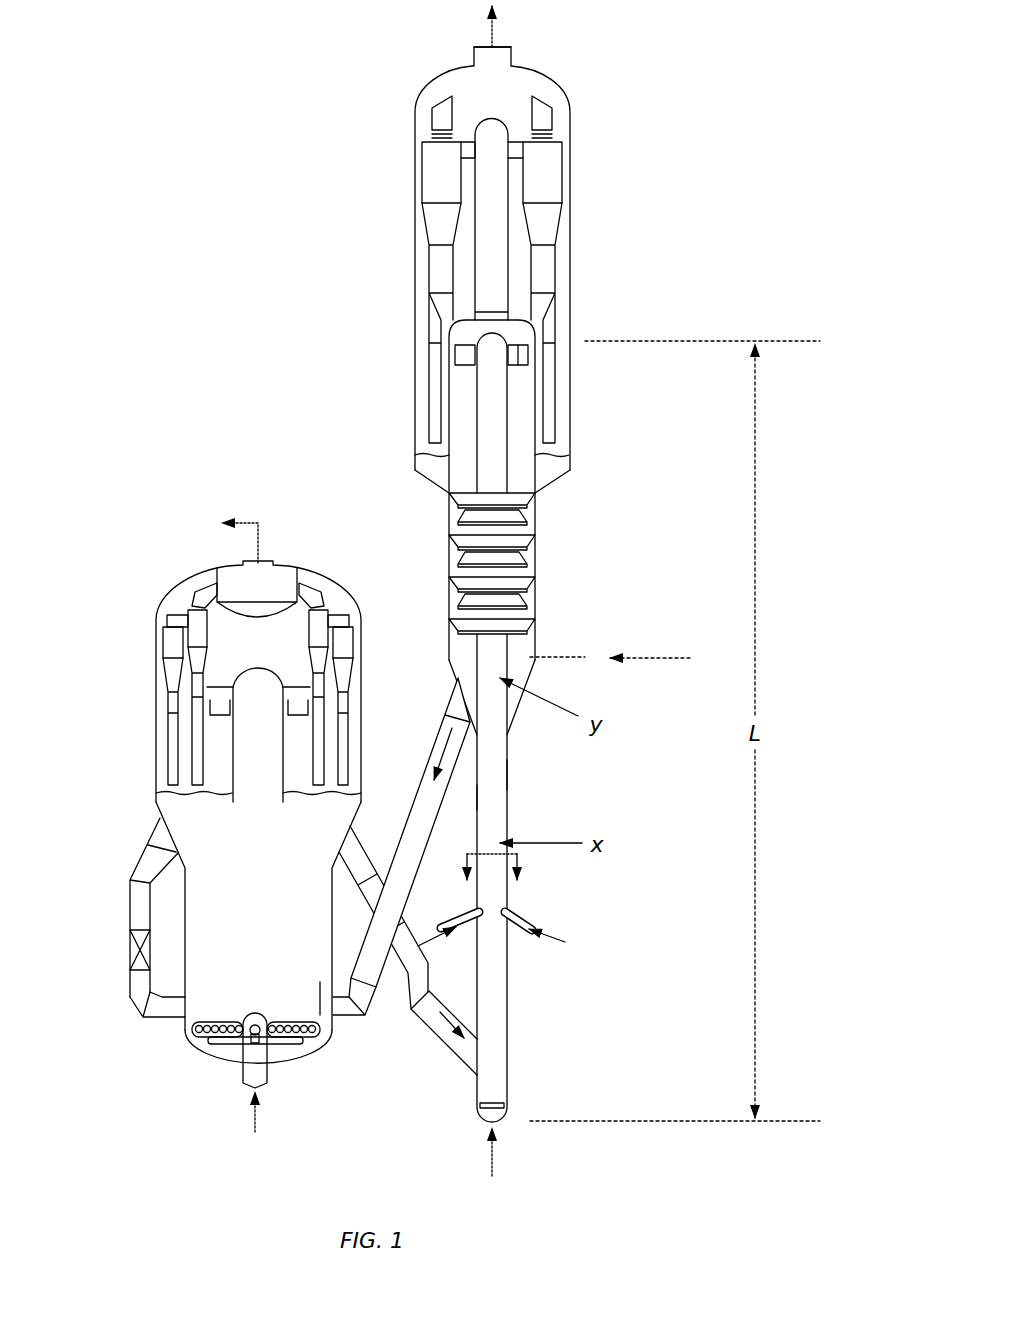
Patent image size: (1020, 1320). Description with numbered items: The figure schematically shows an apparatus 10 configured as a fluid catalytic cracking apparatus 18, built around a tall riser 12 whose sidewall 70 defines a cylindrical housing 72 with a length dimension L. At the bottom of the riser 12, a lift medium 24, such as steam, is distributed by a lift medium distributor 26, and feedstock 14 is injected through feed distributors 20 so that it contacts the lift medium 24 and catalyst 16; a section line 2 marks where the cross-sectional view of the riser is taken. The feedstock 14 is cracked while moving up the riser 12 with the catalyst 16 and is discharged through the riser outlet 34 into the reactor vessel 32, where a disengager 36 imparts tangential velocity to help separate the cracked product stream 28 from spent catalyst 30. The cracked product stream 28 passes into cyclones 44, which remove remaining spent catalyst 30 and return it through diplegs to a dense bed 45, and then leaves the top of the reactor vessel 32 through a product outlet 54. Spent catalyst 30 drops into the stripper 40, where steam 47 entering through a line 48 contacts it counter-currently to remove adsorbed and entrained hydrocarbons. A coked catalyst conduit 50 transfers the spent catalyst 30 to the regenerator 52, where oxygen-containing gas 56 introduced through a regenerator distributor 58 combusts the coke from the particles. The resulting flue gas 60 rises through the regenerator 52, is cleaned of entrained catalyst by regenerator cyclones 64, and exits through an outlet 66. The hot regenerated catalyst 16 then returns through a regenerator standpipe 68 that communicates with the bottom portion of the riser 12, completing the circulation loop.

The apparatus 10 is at (670, 75).
The riser 12 is at (510, 817).
The feedstock 14 is at (433, 935).
The catalyst 16 is at (450, 1032).
The fluid catalytic cracking apparatus 18 is at (362, 398).
The line 2- 2 is at (488, 880).
The feed distributors 20 is at (462, 938).
The lift medium 24 is at (494, 1160).
The lift medium distributor 26 is at (478, 1106).
The cracked product stream 28 is at (494, 24).
The spent catalyst 30 is at (451, 732).
The reactor vessel 32 is at (572, 228).
The riser outlet 34 is at (528, 360).
The disengager 36 is at (462, 347).
The stripper 40 is at (536, 522).
The cyclones 44 is at (437, 172).
The dense bed 45 is at (422, 460).
The steam 47 is at (650, 662).
The line 48 is at (560, 660).
The coked catalyst conduit 50 is at (432, 768).
The regenerator 52 is at (205, 900).
The product outlet 54 is at (481, 46).
The oxygen-containing gas 56 is at (255, 1124).
The regenerator distributor 58 is at (245, 1072).
The flue gas 60 is at (258, 540).
The regenerator cyclones 64 is at (170, 645).
The outlet 66 is at (270, 566).
The regenerator standpipe 68 is at (403, 972).
The sidewall 70 is at (510, 772).
The cylindrical housing 72 is at (497, 797).